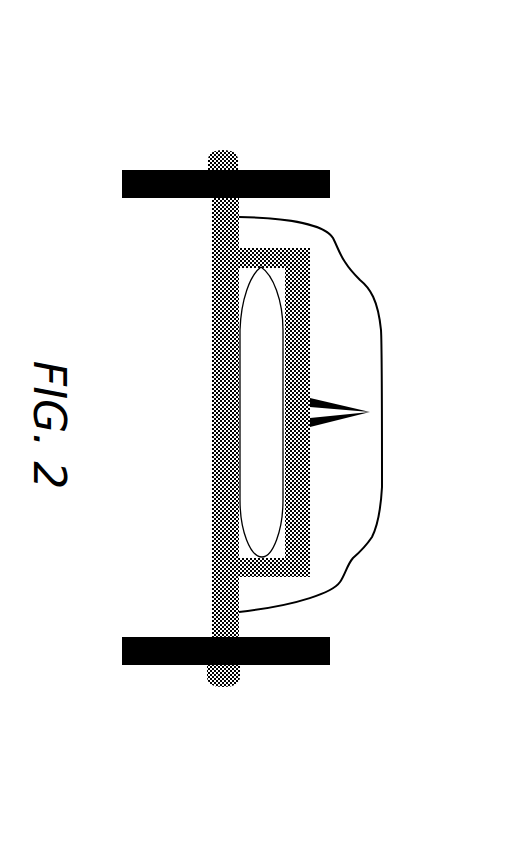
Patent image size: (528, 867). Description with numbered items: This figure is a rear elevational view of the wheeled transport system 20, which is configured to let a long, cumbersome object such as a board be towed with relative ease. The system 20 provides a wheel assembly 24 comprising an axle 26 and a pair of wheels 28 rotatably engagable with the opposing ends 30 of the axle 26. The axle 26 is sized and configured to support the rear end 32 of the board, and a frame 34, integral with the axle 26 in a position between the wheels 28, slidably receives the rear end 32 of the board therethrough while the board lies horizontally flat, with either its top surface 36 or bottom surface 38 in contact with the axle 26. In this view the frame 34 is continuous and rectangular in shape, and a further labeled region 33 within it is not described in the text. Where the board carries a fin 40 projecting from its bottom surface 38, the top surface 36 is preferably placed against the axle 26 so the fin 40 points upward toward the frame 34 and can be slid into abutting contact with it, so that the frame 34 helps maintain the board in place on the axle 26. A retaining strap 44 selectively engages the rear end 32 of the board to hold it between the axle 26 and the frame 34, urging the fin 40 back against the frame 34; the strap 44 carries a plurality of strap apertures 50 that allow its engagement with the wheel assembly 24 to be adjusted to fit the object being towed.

The wheeled transport system 20 is at (440, 162).
The wheel assembly 24 is at (312, 684).
The axle 26 is at (208, 429).
The wheels 28 is at (153, 170).
The opposing ends of the axle 30 is at (212, 205).
The rear end of the board 32 is at (259, 394).
The cavity 33 is at (260, 428).
The frame 34 is at (318, 527).
The top surface of the board 36 is at (313, 305).
The bottom surface of the board 38 is at (313, 305).
The fin 40 is at (333, 398).
The retaining strap 44 is at (382, 487).
The strap apertures 50 is at (240, 163).